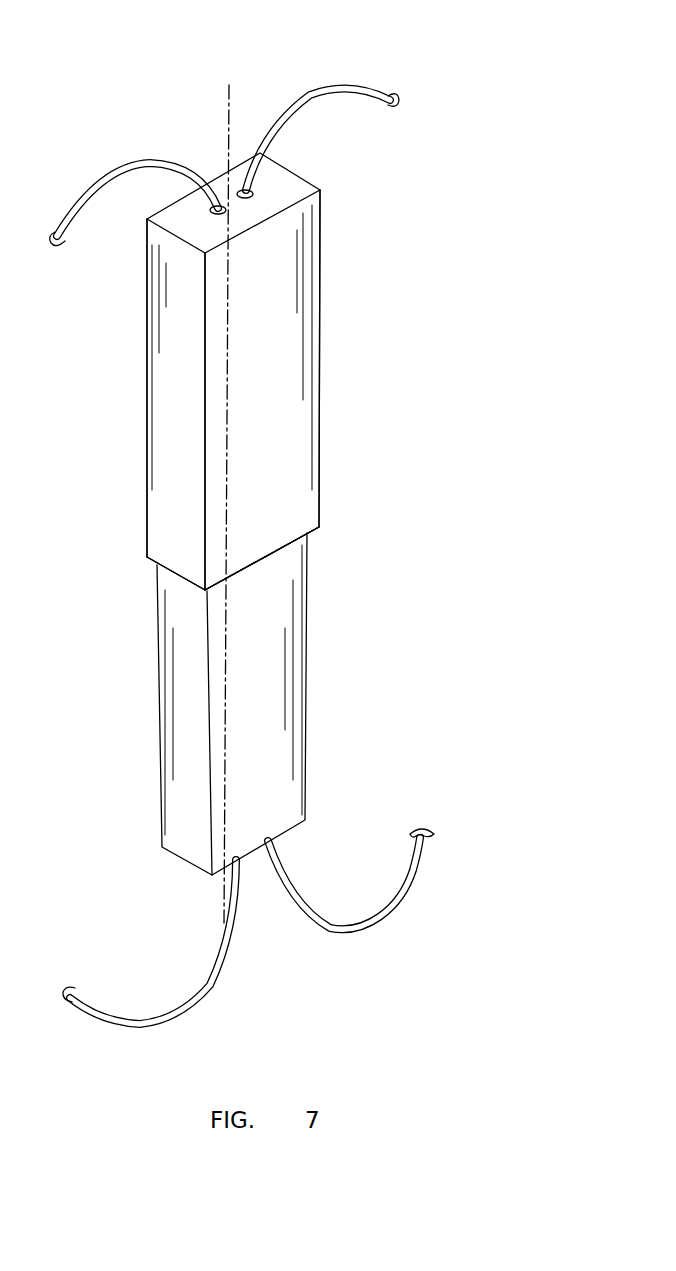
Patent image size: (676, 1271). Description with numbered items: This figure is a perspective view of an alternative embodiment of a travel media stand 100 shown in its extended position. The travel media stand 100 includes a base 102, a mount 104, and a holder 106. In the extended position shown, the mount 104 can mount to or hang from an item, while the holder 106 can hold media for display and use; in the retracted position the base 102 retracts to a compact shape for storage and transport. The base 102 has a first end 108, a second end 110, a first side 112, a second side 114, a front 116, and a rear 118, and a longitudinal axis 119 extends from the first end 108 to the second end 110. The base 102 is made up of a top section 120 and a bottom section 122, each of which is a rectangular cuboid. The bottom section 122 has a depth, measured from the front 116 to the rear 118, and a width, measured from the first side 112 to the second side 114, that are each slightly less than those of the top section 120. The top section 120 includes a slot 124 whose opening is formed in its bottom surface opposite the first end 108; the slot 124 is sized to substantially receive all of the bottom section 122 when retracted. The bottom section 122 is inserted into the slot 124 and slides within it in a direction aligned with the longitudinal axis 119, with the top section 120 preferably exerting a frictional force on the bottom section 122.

The travel media stand 100 is at (289, 515).
The base 102 is at (252, 513).
The mount 104 is at (115, 125).
The holder 106 is at (403, 915).
The first end 108 is at (280, 188).
The second end 110 is at (253, 850).
The first side 112 is at (173, 463).
The second side 114 is at (319, 407).
The front 116 is at (243, 385).
The rear 118 is at (147, 340).
The longitudinal axis 119 is at (230, 97).
The top section 120 is at (170, 537).
The bottom section 122 is at (180, 788).
The slot 124 is at (318, 530).